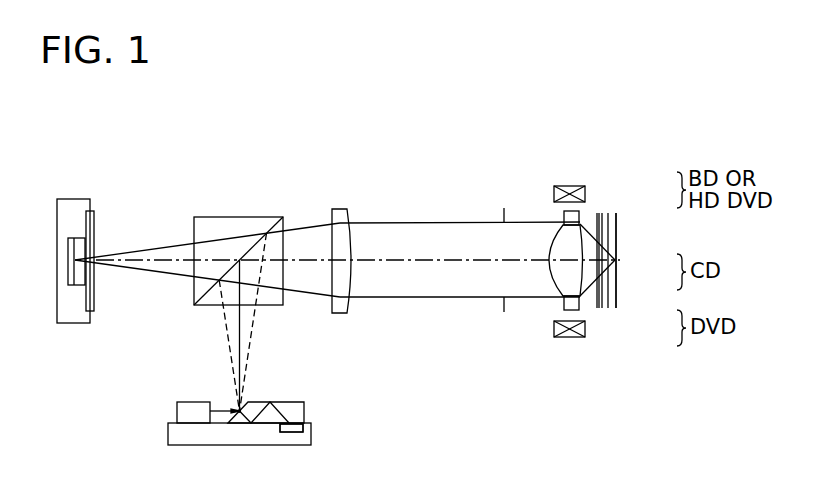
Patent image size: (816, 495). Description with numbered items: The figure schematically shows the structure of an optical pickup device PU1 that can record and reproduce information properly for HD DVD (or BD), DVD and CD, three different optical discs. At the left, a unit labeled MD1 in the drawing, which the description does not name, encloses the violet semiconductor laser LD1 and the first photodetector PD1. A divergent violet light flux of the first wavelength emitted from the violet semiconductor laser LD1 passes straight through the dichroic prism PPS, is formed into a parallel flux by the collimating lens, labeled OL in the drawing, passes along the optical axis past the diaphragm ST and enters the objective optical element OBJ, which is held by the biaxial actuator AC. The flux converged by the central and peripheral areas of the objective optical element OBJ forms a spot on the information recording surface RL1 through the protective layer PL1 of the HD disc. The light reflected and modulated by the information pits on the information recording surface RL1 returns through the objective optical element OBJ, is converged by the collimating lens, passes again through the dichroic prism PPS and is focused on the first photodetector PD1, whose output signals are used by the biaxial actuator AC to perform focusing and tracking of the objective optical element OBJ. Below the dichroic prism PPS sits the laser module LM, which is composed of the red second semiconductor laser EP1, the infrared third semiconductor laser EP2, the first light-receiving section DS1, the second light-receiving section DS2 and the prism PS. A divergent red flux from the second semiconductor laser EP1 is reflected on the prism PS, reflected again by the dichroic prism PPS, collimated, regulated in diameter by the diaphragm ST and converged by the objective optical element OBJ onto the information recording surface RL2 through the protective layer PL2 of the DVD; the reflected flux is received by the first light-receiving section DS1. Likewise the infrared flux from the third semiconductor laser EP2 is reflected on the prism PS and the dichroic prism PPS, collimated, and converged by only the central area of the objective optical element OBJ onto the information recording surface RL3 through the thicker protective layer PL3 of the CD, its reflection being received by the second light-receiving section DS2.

The optical pickup device PU1 is at (143, 129).
The light source module MD1 is at (110, 376).
The violet semiconductor laser LD1 is at (72, 323).
The first photodetector PD1 is at (91, 294).
The dichroic prism PPS is at (235, 217).
The collimating lens OL is at (342, 208).
The diaphragm ST is at (504, 311).
The objective optical element OBJ is at (562, 287).
The biaxial actuator AC is at (568, 337).
The protective layer PL1 is at (598, 213).
The information recording surface RL1 is at (608, 227).
The protective layer PL3 is at (611, 246).
The information recording surface RL3 is at (617, 283).
The information recording surface RL2 is at (608, 302).
The protective layer PL2 is at (599, 308).
The second semiconductor laser EP1 is at (238, 410).
The third semiconductor laser EP2 is at (192, 386).
The prism PS is at (305, 406).
The laser module LM is at (168, 428).
The first light-receiving section DS1 is at (292, 432).
The second light-receiving section DS2 is at (291, 428).